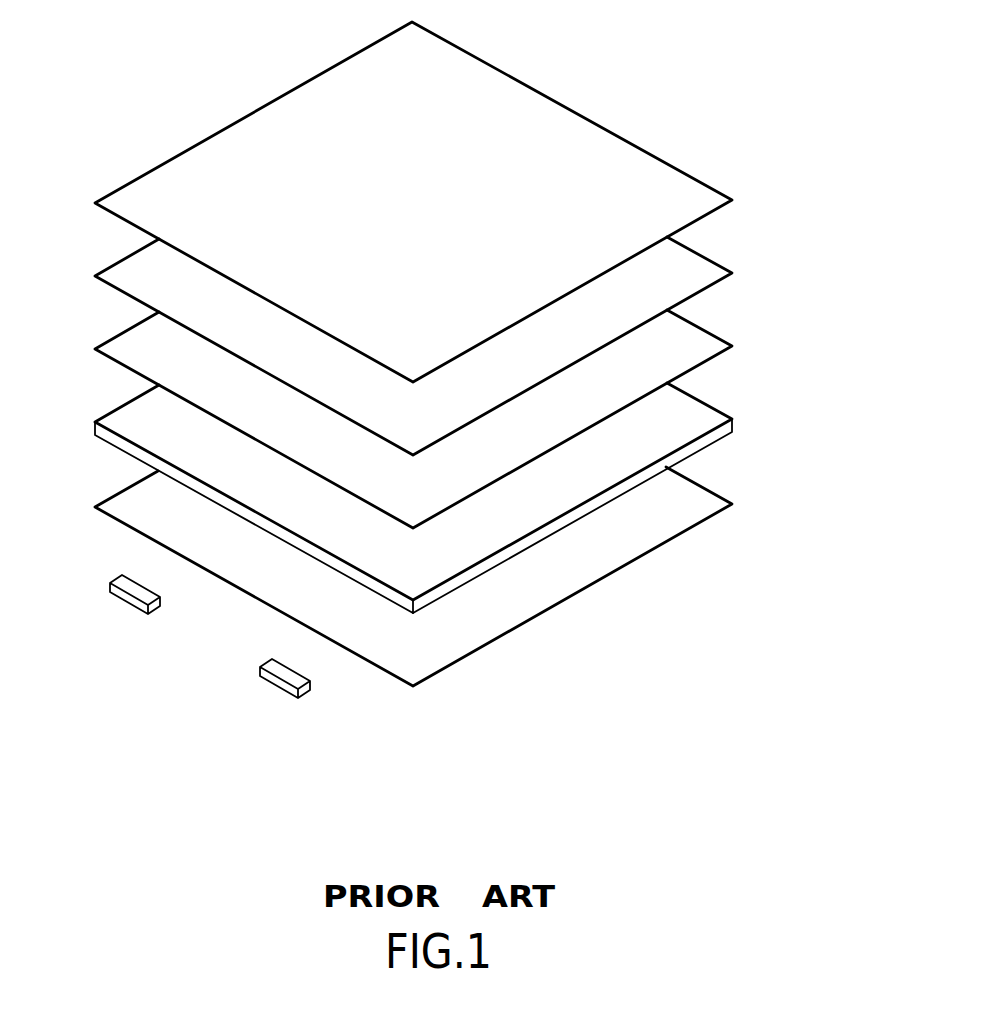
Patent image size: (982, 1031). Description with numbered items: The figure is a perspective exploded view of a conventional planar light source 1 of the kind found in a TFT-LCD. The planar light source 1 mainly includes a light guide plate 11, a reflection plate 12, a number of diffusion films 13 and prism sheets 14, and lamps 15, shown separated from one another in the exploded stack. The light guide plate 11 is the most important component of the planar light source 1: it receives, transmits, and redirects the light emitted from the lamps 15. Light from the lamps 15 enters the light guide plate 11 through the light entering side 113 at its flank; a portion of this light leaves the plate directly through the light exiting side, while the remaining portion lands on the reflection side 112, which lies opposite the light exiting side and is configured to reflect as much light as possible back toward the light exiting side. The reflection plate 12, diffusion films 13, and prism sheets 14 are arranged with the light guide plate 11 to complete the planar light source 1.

The planar light source 1 is at (70, 204).
The light guide plate 11 is at (466, 572).
The reflection side 112 is at (710, 455).
The light entering side 113 is at (385, 590).
The reflection plate 12 is at (638, 548).
The diffusion films 13 is at (672, 283).
The prism sheets 14 is at (688, 193).
The lamps 15 is at (127, 593).